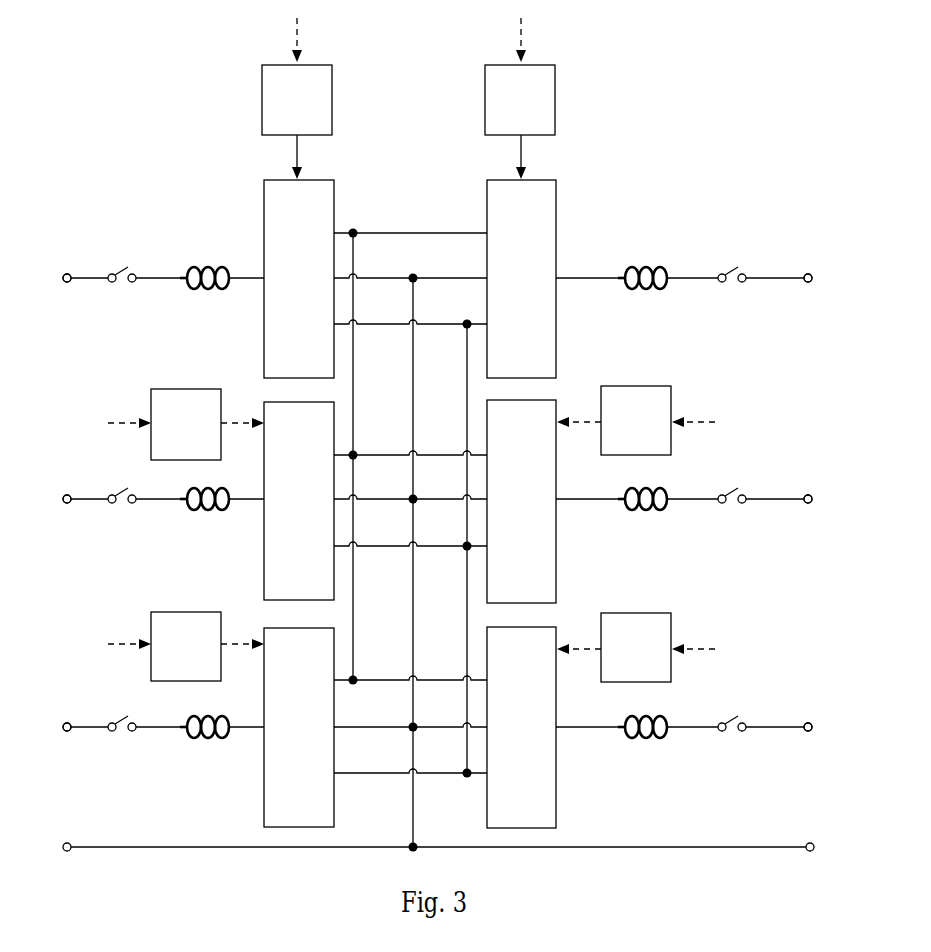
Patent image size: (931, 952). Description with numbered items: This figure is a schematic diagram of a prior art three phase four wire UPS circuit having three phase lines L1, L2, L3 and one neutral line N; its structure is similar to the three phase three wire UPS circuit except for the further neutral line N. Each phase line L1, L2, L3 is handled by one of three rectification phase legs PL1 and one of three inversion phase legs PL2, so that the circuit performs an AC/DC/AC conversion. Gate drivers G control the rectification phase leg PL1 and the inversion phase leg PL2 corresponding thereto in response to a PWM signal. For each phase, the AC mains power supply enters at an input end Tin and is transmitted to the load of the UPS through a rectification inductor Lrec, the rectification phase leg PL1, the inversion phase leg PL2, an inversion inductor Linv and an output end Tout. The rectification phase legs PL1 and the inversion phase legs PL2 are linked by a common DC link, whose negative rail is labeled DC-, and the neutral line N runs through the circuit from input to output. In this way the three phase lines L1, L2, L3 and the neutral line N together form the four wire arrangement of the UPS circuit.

The gate driver G is at (411, 373).
The PWM signal PWM is at (413, 353).
The rectification phase leg PL1 is at (299, 503).
The inversion phase leg PL2 is at (521, 504).
The phase line L1 is at (444, 259).
The phase line L2 is at (444, 480).
The phase line L3 is at (444, 708).
The rectification inductor Lrec is at (204, 519).
The inversion inductor Linv is at (643, 519).
The input end Tin is at (52, 517).
The output end Tout is at (820, 523).
The negative DC bus DC- is at (410, 559).
The neutral line N is at (439, 554).